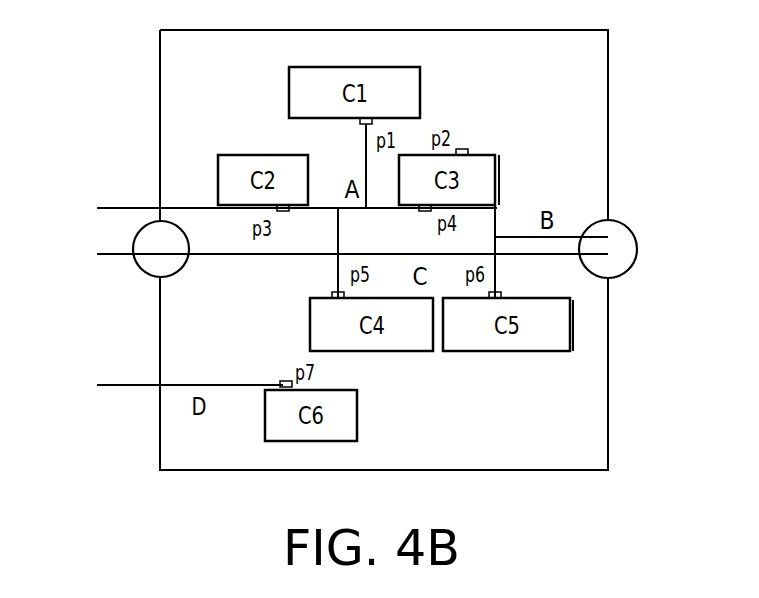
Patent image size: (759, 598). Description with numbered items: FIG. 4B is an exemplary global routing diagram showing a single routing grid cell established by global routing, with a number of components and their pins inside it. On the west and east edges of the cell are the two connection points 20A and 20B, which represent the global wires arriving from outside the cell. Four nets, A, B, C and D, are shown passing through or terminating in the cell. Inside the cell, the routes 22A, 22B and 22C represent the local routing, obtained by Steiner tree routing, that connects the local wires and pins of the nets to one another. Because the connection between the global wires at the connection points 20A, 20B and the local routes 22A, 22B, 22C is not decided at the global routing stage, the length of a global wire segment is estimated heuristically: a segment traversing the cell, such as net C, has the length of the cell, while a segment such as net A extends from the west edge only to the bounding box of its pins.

The connection point 20A is at (133, 246).
The connection point 20B is at (622, 225).
The route 22A is at (366, 157).
The route 22B is at (385, 207).
The route 22C is at (338, 236).